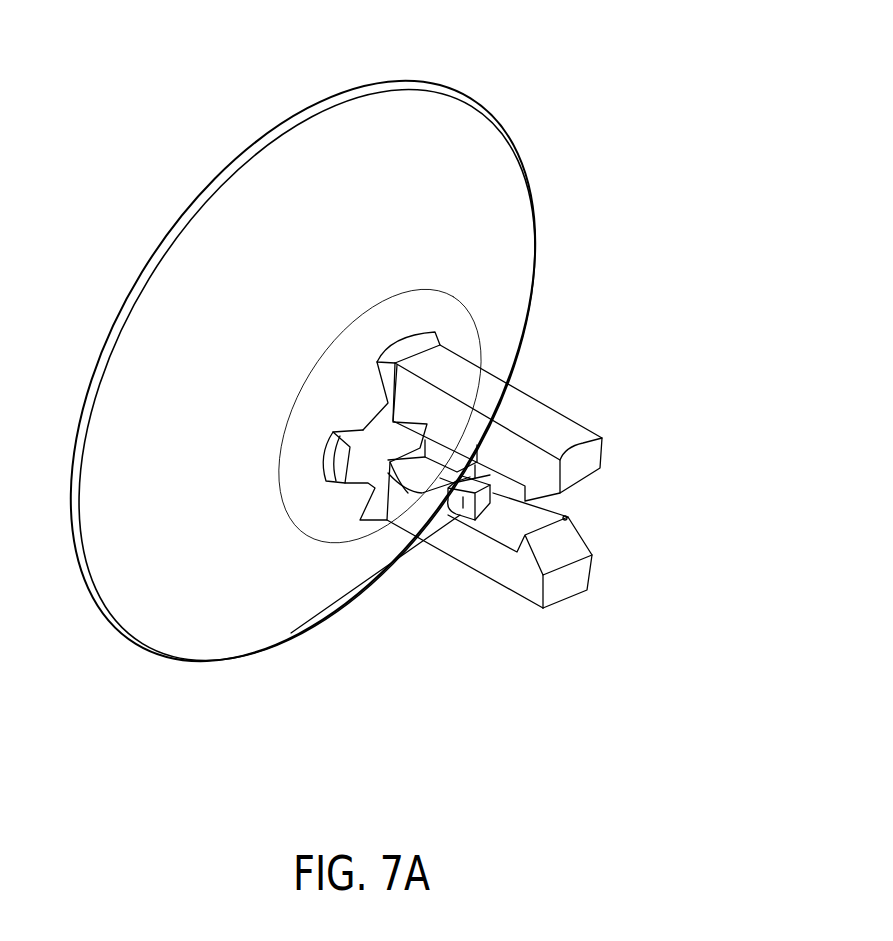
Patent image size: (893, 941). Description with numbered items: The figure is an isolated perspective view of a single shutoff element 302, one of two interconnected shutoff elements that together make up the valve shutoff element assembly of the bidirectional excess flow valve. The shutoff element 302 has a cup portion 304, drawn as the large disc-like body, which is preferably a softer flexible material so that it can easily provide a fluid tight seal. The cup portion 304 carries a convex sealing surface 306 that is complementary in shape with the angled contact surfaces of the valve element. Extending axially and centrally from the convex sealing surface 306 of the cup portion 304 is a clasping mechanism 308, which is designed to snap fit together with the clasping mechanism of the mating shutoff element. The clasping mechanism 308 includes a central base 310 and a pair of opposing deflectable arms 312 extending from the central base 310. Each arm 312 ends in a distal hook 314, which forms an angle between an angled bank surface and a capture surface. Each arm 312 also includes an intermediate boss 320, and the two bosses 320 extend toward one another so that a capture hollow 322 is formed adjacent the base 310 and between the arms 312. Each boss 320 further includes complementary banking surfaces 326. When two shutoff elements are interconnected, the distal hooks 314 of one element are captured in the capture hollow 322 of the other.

The shutoff element 302 is at (108, 101).
The cup portion 304 is at (512, 192).
The convex sealing surface 306 is at (515, 275).
The clasping mechanism 308 is at (667, 528).
The central base 310 is at (343, 523).
The deflectable arm 312 is at (603, 438).
The distal hook 314 is at (567, 517).
The intermediate boss 320 is at (442, 450).
The capture hollow 322 is at (398, 523).
The banking surface 326 is at (568, 548).